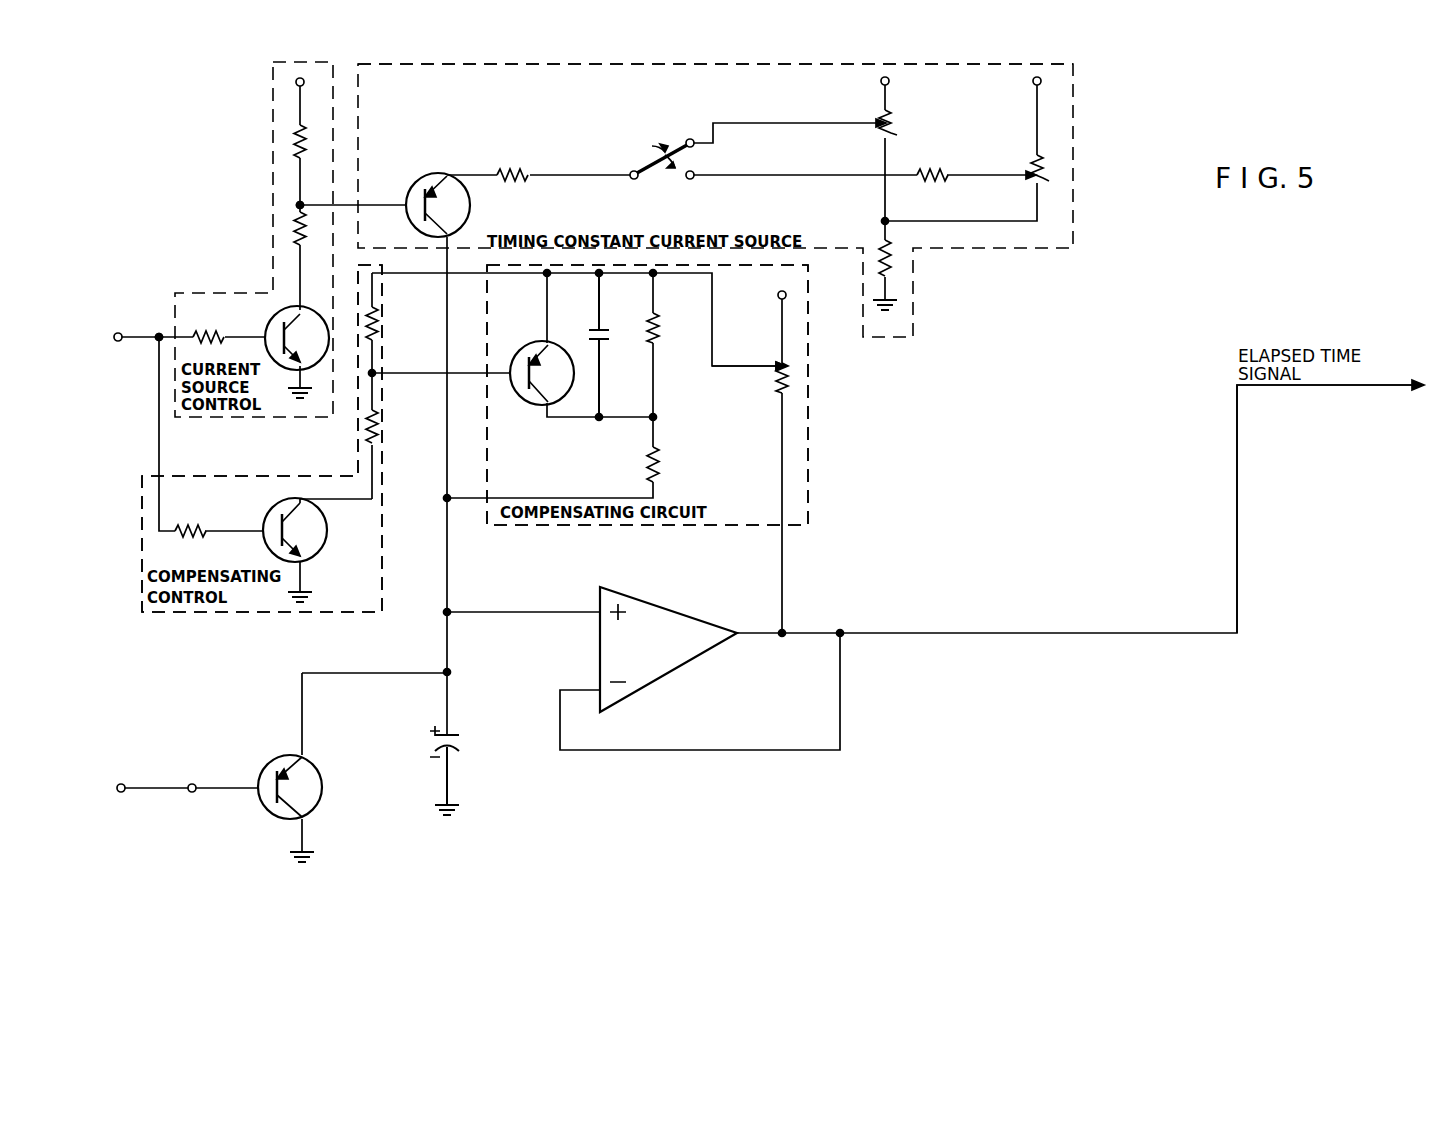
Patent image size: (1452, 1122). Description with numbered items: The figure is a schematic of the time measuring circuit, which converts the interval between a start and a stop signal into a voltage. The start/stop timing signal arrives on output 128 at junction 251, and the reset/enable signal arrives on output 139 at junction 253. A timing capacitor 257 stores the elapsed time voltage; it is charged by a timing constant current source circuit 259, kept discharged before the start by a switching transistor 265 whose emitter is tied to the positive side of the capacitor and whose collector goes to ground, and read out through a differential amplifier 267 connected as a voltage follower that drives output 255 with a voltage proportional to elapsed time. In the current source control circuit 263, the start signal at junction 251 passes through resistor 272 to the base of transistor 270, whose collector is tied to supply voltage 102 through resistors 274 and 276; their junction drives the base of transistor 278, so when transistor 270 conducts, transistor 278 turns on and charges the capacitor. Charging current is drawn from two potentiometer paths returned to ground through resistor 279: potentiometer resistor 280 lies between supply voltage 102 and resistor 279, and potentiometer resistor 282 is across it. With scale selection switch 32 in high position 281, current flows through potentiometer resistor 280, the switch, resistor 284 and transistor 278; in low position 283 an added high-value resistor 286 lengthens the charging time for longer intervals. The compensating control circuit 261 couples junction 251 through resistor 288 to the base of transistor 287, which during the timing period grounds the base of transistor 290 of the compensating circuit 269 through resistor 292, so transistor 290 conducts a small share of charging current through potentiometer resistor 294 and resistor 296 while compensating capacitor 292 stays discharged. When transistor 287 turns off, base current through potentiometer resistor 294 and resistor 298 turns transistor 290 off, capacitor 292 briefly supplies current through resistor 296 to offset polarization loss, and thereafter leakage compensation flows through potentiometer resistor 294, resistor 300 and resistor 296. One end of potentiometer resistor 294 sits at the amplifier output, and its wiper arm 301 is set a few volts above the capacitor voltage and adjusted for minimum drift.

The supply voltage 102 is at (296, 82).
The output 128 is at (122, 313).
The output 139 is at (121, 784).
The junction 251 is at (160, 330).
The junction 253 is at (192, 784).
The output 255 is at (1256, 387).
The timing capacitor 257 is at (452, 734).
The timing constant current source circuit 259 is at (618, 63).
The compensating control circuit 261 is at (337, 614).
The current source control circuit 263 is at (274, 250).
The switching transistor 265 is at (323, 776).
The differential amplifier 267 is at (651, 603).
The compensating circuit 269 is at (810, 428).
The transistor 270 is at (272, 314).
The resistor 272 is at (215, 325).
The resistor 274 is at (296, 145).
The resistor 276 is at (297, 222).
The transistor 278 is at (420, 182).
The resistor 279 is at (890, 258).
The potentiometer resistor 280 is at (888, 122).
The high position 281 is at (694, 140).
The potentiometer resistor 282 is at (1035, 158).
The low position 283 is at (697, 179).
The resistor 284 is at (516, 173).
The resistor 286 is at (932, 170).
The transistor 287 is at (305, 553).
The resistor 288 is at (190, 529).
The transistor 290 is at (526, 352).
The resistor / compensating capacitor 292 is at (377, 424).
The potentiometer resistor 294 is at (778, 382).
The resistor 296 is at (658, 462).
The resistor 298 is at (377, 312).
The resistor 300 is at (658, 325).
The wiper arm 301 is at (738, 364).
The scale selection switch 32 is at (646, 164).